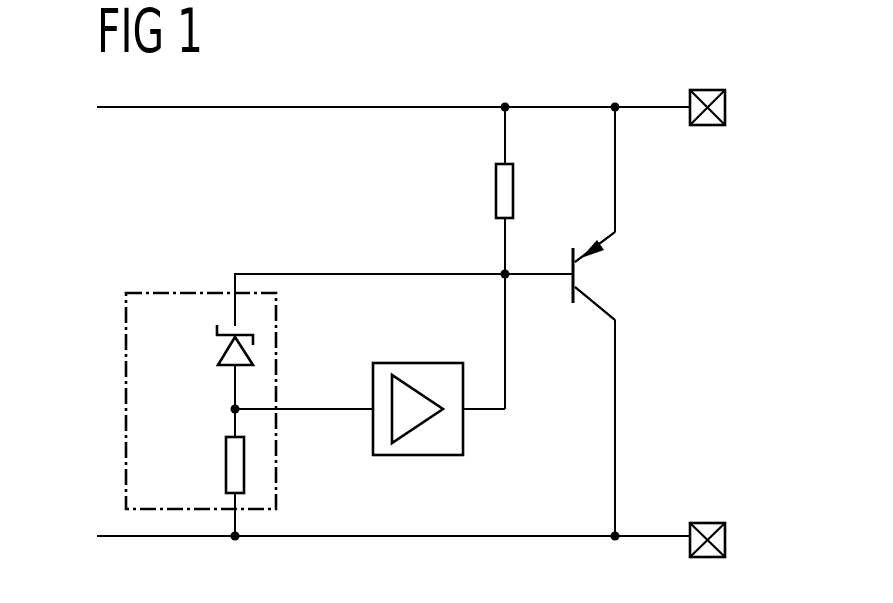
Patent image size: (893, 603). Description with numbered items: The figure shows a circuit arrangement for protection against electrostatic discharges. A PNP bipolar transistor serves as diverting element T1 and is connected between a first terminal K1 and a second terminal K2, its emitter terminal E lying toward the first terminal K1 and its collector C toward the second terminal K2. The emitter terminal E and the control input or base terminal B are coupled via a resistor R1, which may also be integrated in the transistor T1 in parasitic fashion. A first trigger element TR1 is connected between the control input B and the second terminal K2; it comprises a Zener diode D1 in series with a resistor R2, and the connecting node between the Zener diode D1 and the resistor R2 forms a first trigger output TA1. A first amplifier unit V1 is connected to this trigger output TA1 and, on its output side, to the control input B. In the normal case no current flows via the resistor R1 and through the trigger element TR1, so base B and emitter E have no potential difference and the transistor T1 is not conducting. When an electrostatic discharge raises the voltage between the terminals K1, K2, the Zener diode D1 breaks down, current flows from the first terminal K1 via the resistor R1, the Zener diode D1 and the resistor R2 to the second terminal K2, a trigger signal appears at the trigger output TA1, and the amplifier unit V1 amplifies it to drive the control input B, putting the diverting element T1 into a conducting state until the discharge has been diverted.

The first terminal K1 is at (707, 125).
The second terminal K2 is at (707, 523).
The resistor R1 is at (496, 192).
The resistor R2 is at (226, 465).
The Zener diode D1 is at (222, 352).
The first trigger element TR1 is at (150, 290).
The first trigger output TA1 is at (277, 404).
The first amplifier unit V1 is at (417, 455).
The diverting element T1 is at (583, 277).
The emitter terminal E is at (595, 229).
The base terminal B is at (539, 260).
The collector C is at (595, 325).